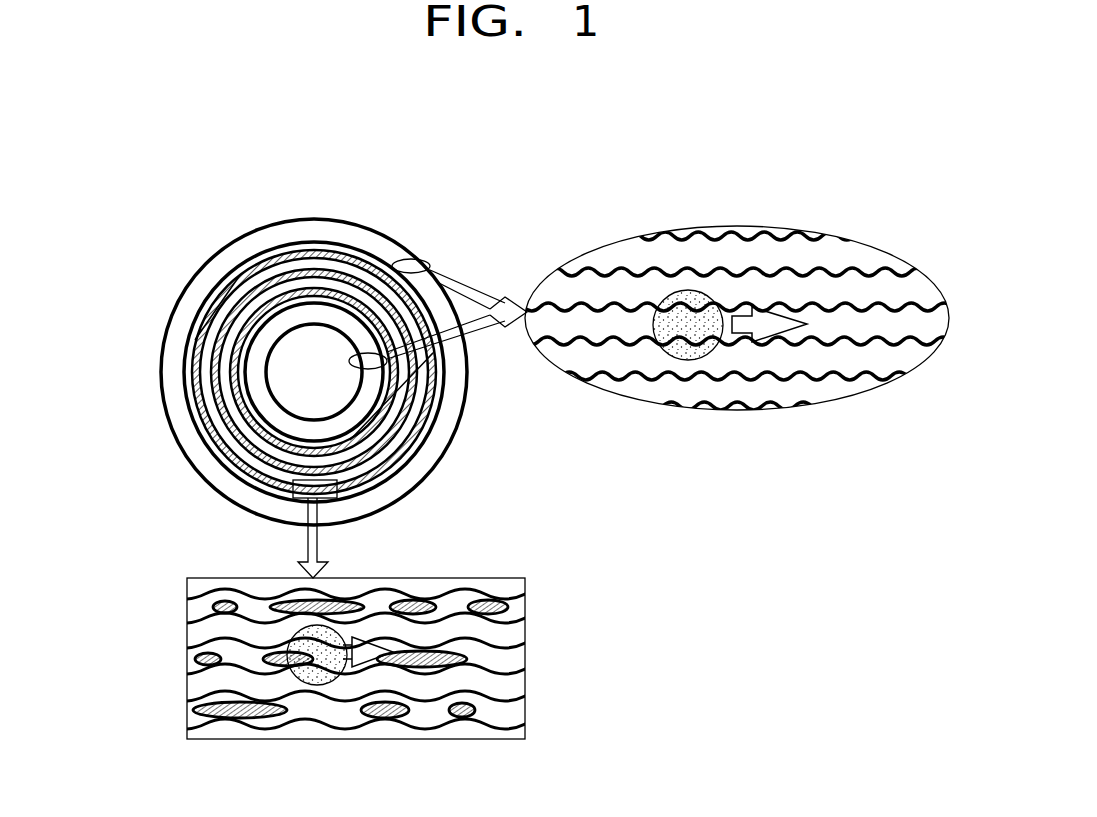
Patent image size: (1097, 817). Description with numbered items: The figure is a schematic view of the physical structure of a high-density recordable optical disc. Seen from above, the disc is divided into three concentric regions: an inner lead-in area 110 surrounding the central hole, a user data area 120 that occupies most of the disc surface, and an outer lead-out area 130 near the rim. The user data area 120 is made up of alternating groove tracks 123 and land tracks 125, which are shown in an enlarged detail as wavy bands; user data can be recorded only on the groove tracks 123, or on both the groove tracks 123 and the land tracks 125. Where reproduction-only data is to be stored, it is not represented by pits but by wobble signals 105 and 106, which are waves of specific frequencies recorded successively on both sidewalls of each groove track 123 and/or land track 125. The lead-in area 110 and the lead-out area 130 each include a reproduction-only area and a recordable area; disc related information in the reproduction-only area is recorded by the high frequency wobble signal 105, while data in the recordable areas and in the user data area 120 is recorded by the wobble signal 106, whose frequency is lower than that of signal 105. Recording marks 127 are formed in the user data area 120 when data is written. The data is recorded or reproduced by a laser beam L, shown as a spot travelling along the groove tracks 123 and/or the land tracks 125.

The high frequency wobble signal 105 is at (757, 265).
The wobble signal 106 is at (460, 583).
The lead-in area 110 is at (315, 304).
The user data area 120 is at (172, 360).
The groove tracks 123 is at (190, 611).
The land tracks 125 is at (190, 639).
The recording marks 127 is at (458, 717).
The lead-out area 130 is at (268, 232).
The laser beam L is at (678, 296).